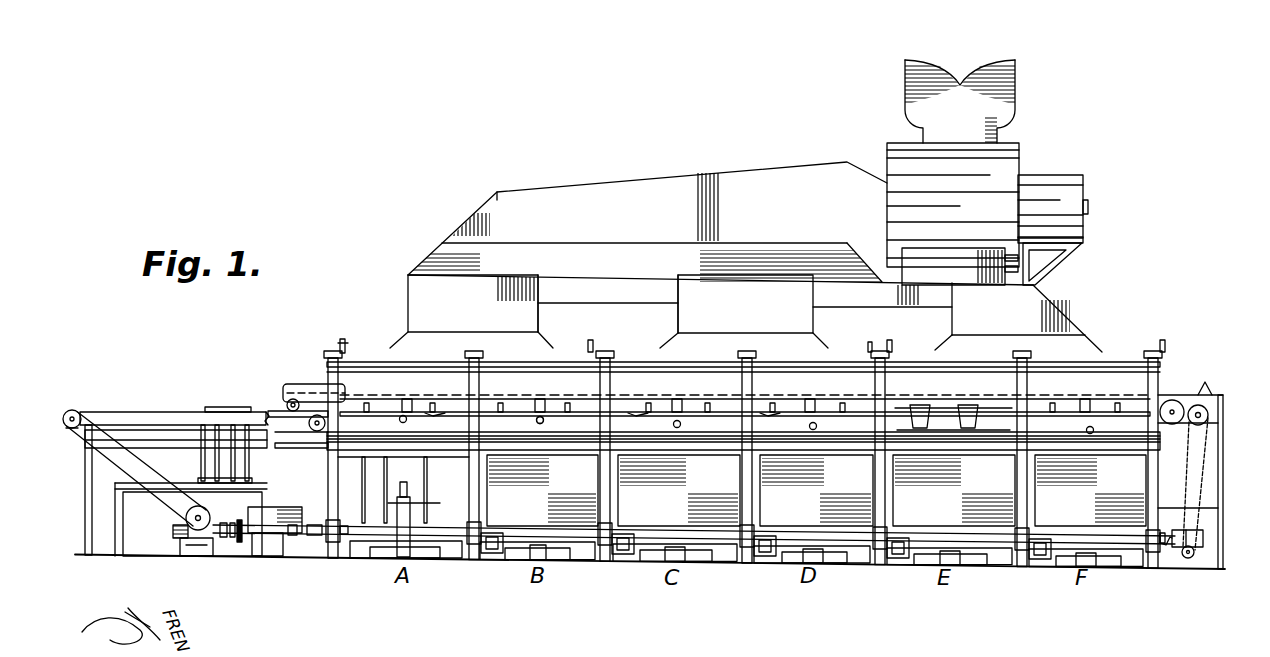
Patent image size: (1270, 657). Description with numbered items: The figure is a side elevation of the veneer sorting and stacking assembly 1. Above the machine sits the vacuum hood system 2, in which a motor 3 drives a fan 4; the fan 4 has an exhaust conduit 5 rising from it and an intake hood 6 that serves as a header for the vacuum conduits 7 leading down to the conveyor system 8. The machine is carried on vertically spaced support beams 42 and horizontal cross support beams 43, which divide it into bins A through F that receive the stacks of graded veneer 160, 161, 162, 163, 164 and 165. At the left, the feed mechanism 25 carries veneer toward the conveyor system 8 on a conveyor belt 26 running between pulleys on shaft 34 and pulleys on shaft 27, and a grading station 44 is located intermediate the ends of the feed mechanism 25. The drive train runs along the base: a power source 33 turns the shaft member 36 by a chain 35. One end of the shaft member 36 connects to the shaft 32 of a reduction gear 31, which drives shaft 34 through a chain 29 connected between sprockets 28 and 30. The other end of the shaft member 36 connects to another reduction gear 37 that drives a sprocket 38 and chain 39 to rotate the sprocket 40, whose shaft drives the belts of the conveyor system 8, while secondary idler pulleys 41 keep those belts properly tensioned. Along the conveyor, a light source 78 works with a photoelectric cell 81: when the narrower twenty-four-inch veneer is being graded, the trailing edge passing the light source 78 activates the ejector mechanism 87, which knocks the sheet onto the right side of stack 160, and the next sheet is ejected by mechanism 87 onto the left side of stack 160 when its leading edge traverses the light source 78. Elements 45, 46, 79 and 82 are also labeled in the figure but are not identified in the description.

The sorting and stacking assembly 1 is at (1121, 254).
The vacuum hood system 2 is at (581, 191).
The motor 3 is at (1072, 186).
The fan 4 is at (1010, 168).
The exhaust conduit 5 is at (1001, 93).
The intake hood 6 is at (524, 194).
The vacuum conduits 7 is at (523, 316).
The conveyor system 8 is at (293, 382).
The feed mechanism 25 is at (163, 410).
The conveyor belt 26 is at (118, 410).
The shaft 27 is at (316, 429).
The sprocket 28 is at (74, 410).
The chain 29 is at (124, 462).
The sprocket 30 is at (174, 527).
The reduction gear 31 is at (208, 519).
The shaft 32 is at (219, 540).
The power source 33 is at (278, 507).
The shaft 34 is at (75, 429).
The chain 35 is at (240, 521).
The shaft member 36 is at (350, 538).
The reduction gear 37 is at (1178, 549).
The sprocket 38 is at (1191, 558).
The chain 39 is at (1195, 500).
The sprocket 40 is at (1193, 424).
The secondary idler pulleys 41 is at (1174, 410).
The support beams 42 is at (87, 498).
The horizontal cross support beams 43 is at (326, 356).
The grading station 44 is at (227, 408).
The bar 45 is at (182, 484).
The housing 46 is at (115, 541).
The light source 78 is at (406, 415).
The hole 79 is at (541, 426).
The photoelectric cell 81 is at (408, 398).
The chain 82 is at (548, 398).
The ejector mechanism 87 is at (375, 418).
The stack of graded veneer 160 is at (446, 446).
The stack of graded veneer 161 is at (544, 512).
The stack of graded veneer 162 is at (696, 509).
The stack of graded veneer 163 is at (818, 515).
The stack of graded veneer 164 is at (969, 512).
The stack of graded veneer 165 is at (1111, 502).